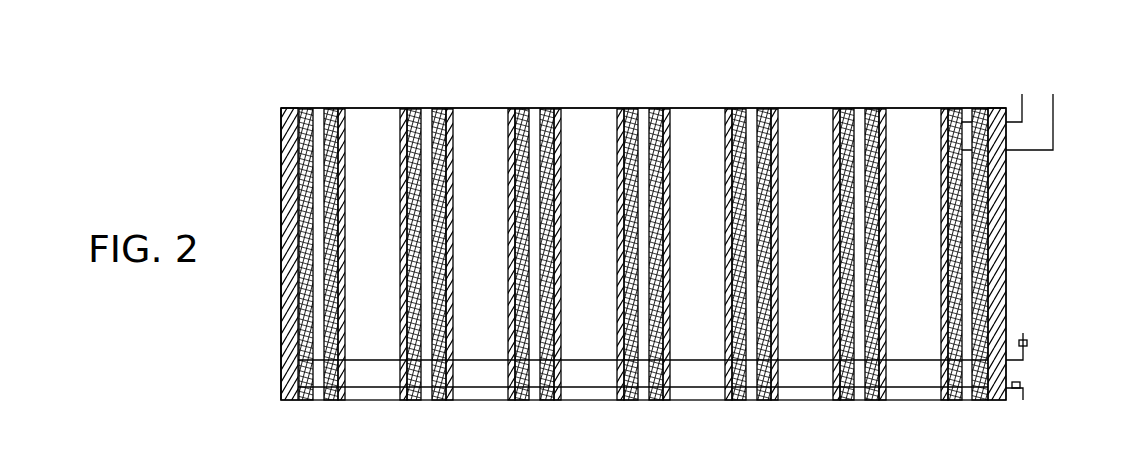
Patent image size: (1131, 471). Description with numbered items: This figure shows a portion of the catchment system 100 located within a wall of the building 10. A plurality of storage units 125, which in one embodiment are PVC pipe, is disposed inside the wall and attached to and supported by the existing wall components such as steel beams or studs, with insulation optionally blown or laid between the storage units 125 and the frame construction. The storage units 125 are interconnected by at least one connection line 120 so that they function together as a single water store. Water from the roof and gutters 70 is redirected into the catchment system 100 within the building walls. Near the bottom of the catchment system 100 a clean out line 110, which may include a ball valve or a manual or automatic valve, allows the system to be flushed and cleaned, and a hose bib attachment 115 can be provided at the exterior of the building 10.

The building 10 is at (243, 188).
The gutters 70 is at (1053, 122).
The catchment system 100 is at (1029, 236).
The clean out line 110 is at (1027, 390).
The hose bib attachment 115 is at (1027, 347).
The connection line 120 is at (366, 378).
The storage units 125 is at (332, 109).